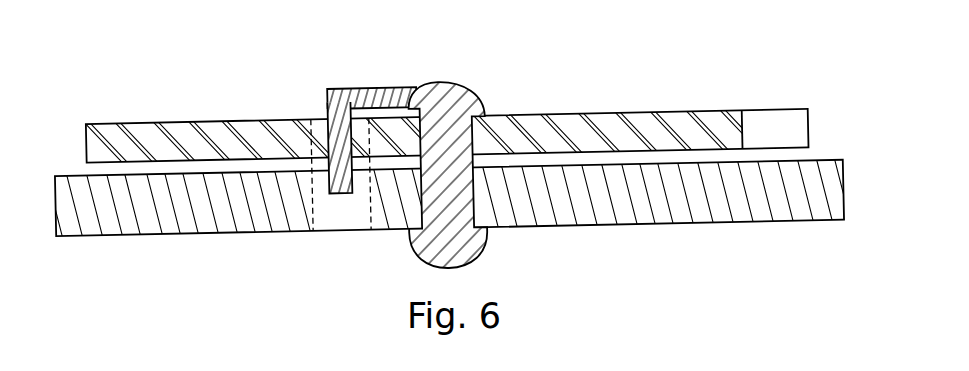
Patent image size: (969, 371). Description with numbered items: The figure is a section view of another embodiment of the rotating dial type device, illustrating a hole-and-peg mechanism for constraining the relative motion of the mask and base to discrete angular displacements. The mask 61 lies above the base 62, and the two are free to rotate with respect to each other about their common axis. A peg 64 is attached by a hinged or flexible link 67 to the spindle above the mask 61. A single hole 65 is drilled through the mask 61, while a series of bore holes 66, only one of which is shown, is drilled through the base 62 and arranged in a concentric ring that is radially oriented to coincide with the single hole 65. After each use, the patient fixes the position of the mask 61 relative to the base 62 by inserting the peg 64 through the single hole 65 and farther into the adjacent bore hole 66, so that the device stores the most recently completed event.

The mask 61 is at (703, 116).
The base 62 is at (750, 208).
The peg 64 is at (345, 137).
The single hole 65 is at (320, 130).
The bore holes 66 is at (325, 217).
The hinged or flexible link 67 is at (380, 86).